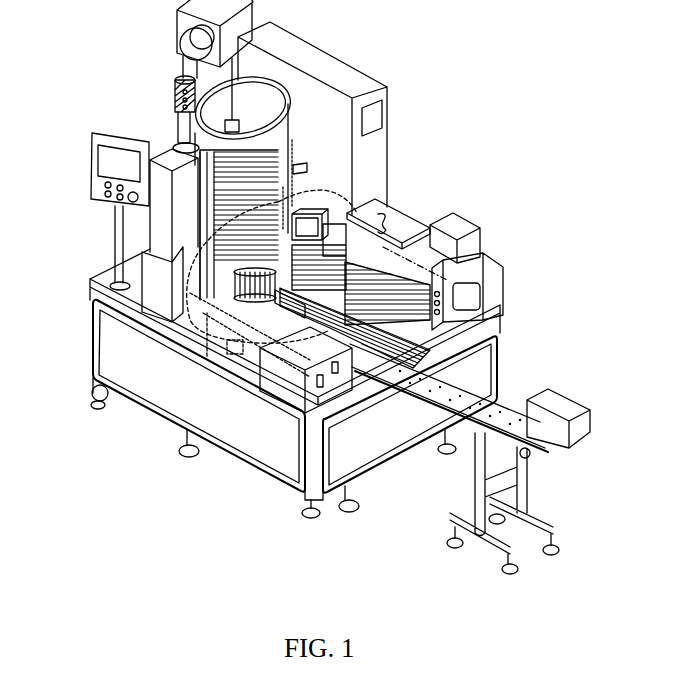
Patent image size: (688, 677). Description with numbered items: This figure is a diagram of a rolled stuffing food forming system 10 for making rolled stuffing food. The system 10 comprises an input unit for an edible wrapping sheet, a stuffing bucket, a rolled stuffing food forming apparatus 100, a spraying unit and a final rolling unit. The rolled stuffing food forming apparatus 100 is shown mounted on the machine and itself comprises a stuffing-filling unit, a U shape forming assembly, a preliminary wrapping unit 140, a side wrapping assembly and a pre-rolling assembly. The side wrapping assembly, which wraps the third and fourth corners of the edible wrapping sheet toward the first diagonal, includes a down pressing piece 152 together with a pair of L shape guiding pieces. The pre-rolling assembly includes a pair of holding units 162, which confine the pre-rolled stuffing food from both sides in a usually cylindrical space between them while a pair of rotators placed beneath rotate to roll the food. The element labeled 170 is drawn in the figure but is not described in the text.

The rolled stuffing food forming system 10 is at (79, 50).
The rolled stuffing food forming apparatus 100 is at (286, 218).
The preliminary wrapping unit 140 is at (293, 294).
The down pressing piece 152 is at (330, 258).
The holding units 162 is at (335, 281).
The pressing head 170 is at (242, 261).